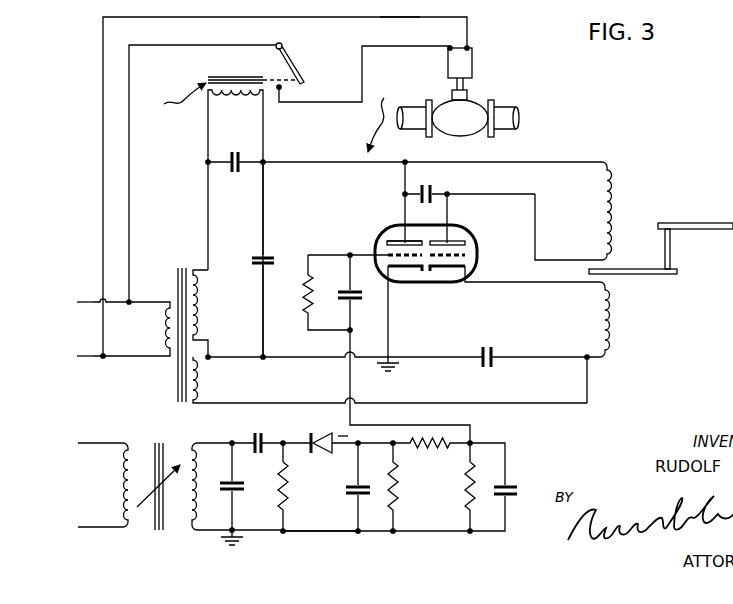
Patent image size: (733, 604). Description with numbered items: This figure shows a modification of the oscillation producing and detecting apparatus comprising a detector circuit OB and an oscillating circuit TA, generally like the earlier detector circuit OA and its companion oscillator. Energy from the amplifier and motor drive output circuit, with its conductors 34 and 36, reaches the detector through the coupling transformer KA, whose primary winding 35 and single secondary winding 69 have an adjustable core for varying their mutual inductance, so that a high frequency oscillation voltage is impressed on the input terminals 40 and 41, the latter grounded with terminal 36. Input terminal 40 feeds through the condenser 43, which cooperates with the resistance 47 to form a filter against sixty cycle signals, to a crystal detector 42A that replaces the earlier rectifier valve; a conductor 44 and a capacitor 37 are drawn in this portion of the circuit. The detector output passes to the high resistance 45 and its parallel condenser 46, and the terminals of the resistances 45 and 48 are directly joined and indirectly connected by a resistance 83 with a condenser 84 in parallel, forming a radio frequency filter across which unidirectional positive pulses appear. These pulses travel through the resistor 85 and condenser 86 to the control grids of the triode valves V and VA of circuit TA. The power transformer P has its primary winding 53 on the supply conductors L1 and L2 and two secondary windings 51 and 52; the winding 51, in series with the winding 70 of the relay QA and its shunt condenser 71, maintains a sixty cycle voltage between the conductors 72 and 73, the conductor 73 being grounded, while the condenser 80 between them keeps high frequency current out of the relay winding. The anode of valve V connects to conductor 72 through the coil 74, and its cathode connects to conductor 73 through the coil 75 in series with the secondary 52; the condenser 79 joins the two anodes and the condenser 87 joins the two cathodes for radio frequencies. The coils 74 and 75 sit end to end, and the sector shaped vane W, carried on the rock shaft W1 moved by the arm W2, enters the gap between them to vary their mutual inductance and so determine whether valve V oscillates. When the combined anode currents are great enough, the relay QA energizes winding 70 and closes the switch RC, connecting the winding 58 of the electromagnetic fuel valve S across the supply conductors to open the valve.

The terminal of primary winding 34 is at (232, 432).
The primary winding 35 is at (194, 472).
The grounded terminal 36 is at (224, 536).
The capacitor 37 is at (245, 490).
The input terminal 40 is at (241, 456).
The input terminal 41 is at (244, 530).
The crystal detector 42A is at (307, 432).
The condenser 43 is at (265, 442).
The conductor 44 is at (287, 448).
The high resistance 45 is at (399, 482).
The condenser 46 is at (346, 495).
The resistance 47 is at (289, 483).
The resistance 48 is at (437, 448).
The secondary winding 51 is at (202, 307).
The secondary winding 52 is at (202, 386).
The primary winding 53 is at (160, 326).
The winding of electromagnetic fuel valve 58 is at (472, 60).
The secondary winding 69 is at (120, 486).
The relay winding 70 is at (222, 100).
The condenser 71 is at (234, 172).
The conductor 72 is at (292, 161).
The conductor 73 is at (289, 357).
The coil 74 is at (595, 226).
The coil 75 is at (600, 324).
The condenser 79 is at (432, 188).
The condenser 80 is at (271, 257).
The resistance 83 is at (464, 500).
The condenser 84 is at (509, 485).
The resistor 85 is at (315, 290).
The condenser 86 is at (355, 305).
The condenser 87 is at (494, 354).
The detection circuit OA is at (400, 8).
The detector circuit OB is at (283, 536).
The switch RC is at (291, 61).
The relay QA is at (171, 98).
The oscillating circuit TA is at (382, 114).
The electromagnetic fuel valve S is at (463, 136).
The triode valve V is at (458, 237).
The triode valve VA is at (392, 234).
The vane W is at (637, 275).
The rock shaft W1 is at (670, 249).
The arm W2 is at (687, 223).
The power transformer P is at (170, 376).
The coupling transformer KA is at (153, 528).
The supply conductor L1 is at (93, 354).
The supply conductor L2 is at (97, 300).